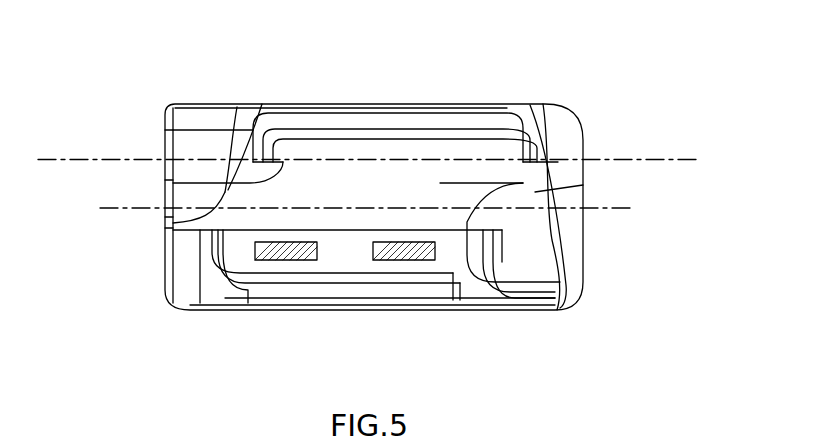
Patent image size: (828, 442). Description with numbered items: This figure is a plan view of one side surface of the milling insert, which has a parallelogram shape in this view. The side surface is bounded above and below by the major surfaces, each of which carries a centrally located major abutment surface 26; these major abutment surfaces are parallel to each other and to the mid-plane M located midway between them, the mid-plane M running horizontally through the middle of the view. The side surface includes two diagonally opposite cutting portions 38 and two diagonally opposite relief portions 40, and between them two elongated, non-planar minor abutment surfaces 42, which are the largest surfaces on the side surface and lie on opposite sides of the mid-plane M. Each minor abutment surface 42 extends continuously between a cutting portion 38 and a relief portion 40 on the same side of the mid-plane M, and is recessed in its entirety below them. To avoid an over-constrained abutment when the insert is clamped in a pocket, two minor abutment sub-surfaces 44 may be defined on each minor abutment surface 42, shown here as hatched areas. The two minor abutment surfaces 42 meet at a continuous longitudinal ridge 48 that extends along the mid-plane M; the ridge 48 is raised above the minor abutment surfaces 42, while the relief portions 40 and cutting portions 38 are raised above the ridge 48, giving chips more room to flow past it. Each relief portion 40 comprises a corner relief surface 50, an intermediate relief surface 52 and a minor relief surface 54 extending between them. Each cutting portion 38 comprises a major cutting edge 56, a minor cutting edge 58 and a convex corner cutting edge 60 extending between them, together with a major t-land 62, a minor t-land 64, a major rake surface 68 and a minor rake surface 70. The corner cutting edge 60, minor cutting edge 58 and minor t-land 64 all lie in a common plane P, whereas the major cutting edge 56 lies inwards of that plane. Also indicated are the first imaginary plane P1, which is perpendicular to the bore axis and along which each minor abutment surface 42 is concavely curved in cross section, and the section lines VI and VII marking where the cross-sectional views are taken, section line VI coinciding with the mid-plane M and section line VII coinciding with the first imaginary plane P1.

The major abutment surface 26 is at (445, 107).
The cutting portion 38 is at (525, 93).
The relief portion 40 is at (229, 95).
The minor abutment surface 42 is at (347, 107).
The minor abutment sub-surface 44 is at (413, 260).
The longitudinal ridge 48 is at (448, 220).
The corner relief surface 50 is at (178, 107).
The intermediate relief surface 52 is at (248, 110).
The minor relief surface 54 is at (237, 107).
The major cutting edge 56 is at (410, 107).
The minor cutting edge 58 is at (596, 133).
The corner cutting edge 60 is at (577, 120).
The major t-land 62 is at (380, 107).
The minor t-land 64 is at (190, 268).
The major rake surface 68 is at (427, 107).
The minor rake surface 70 is at (250, 275).
The common plane P is at (565, 123).
The first imaginary plane P1 is at (696, 140).
The mid-plane M is at (615, 208).
The section line VI is at (100, 208).
The section line VII is at (38, 160).